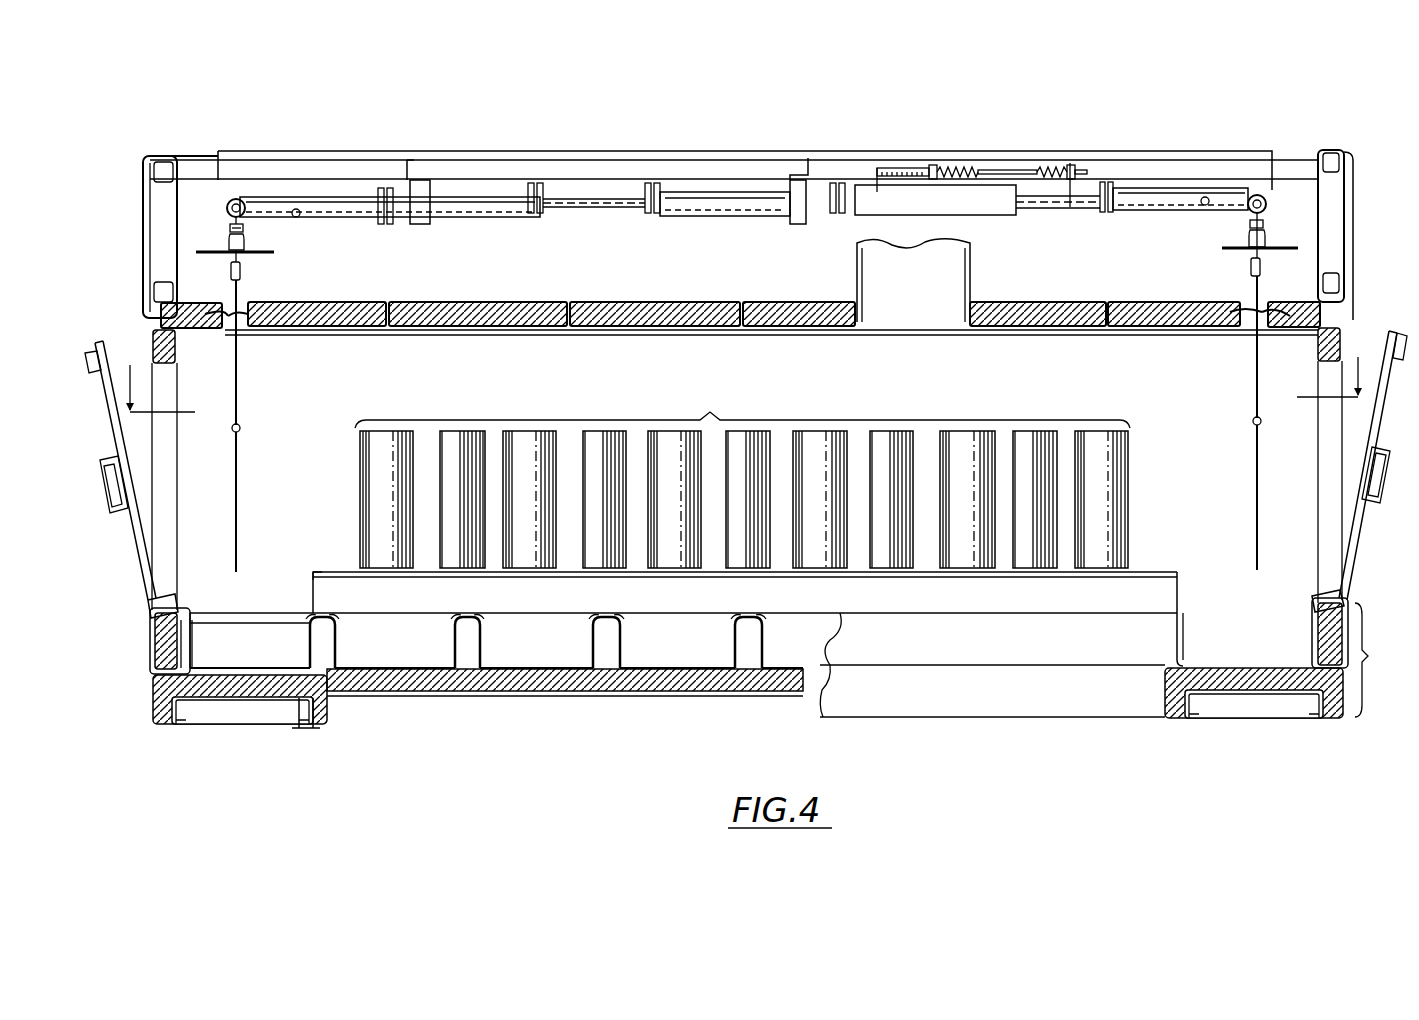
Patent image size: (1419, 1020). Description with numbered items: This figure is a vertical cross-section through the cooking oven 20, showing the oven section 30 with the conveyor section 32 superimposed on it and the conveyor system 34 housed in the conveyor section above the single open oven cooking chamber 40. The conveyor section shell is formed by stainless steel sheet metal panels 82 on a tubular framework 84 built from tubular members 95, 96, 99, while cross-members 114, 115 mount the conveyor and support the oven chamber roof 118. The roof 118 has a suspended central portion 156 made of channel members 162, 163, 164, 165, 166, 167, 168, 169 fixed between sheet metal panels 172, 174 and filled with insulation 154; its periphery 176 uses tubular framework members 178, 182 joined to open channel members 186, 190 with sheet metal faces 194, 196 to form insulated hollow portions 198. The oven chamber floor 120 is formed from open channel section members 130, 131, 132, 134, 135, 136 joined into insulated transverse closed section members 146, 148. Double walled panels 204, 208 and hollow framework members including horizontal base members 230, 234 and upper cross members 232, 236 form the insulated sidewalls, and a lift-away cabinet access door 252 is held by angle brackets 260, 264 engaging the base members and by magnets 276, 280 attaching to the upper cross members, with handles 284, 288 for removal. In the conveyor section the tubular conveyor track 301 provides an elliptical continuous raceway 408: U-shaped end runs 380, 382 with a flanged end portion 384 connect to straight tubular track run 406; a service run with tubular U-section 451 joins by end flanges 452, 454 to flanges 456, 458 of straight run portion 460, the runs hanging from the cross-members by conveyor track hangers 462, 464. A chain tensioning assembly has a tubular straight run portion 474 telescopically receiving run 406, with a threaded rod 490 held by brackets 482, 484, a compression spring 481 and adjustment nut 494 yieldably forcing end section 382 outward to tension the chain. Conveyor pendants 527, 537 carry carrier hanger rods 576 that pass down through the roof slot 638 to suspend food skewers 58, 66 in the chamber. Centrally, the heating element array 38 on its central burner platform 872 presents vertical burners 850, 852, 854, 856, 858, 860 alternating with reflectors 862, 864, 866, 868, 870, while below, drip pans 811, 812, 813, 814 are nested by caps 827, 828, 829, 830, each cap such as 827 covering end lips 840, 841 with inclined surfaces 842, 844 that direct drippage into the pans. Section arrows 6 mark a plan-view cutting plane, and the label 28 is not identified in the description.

The cooking oven 20 is at (140, 100).
The cargo tray assembly 28 is at (857, 272).
The oven section 30 is at (1383, 660).
The conveyor section 32 is at (210, 192).
The conveyor system 34 is at (578, 172).
The heating element array 38 is at (742, 475).
The oven cooking chamber 40 is at (296, 504).
The food skewer 58 is at (1240, 455).
The food skewer 66 is at (245, 462).
The stainless steel sheet metal panels 82 is at (1345, 165).
The tubular framework 84 is at (1310, 160).
The tubular member 95 is at (1330, 290).
The tubular member 96 is at (1318, 152).
The tubular member 99 is at (418, 185).
The cross-member 114 is at (407, 165).
The cross-member 115 is at (815, 178).
The oven chamber roof 118 is at (472, 302).
The oven chamber floor 120 is at (1178, 656).
The open channel section member 130 is at (155, 700).
The open channel section member 131 is at (300, 725).
The open channel section member 132 is at (188, 722).
The open channel section member 134 is at (1345, 712).
The open channel section member 135 is at (1210, 712).
The open channel section member 136 is at (418, 697).
The transverse closed section member 146 is at (200, 700).
The transverse closed section member 148 is at (1275, 700).
The insulation 154 is at (150, 345).
The suspended central portion 156 is at (770, 334).
The channel member 162 is at (335, 303).
The channel member 163 is at (450, 302).
The channel member 164 is at (590, 302).
The channel member 165 is at (740, 302).
The channel member 166 is at (895, 289).
The channel member 167 is at (968, 316).
The channel member 168 is at (1120, 302).
The channel member 169 is at (1150, 333).
The stainless steel sheet metal panel 172 is at (642, 302).
The stainless steel sheet metal panel 174 is at (670, 334).
The roof periphery 176 is at (195, 347).
The tubular framework member 178 is at (150, 300).
The tubular framework member 182 is at (1345, 300).
The open channel member 186 is at (250, 313).
The open channel member 190 is at (1238, 350).
The sheet metal face 194 is at (246, 230).
The sheet metal face 196 is at (178, 345).
The hollow portion 198 is at (180, 300).
The double walled panel 204 is at (172, 530).
The double walled panel 208 is at (1260, 470).
The horizontal base member 230 is at (155, 635).
The upper cross member 232 is at (150, 325).
The horizontal base member 234 is at (1318, 625).
The upper cross member 236 is at (1348, 316).
The cabinet access door 252 is at (1372, 520).
The angle bracket 260 is at (170, 605).
The angle bracket 264 is at (1312, 598).
The magnet 276 is at (88, 372).
The magnet 280 is at (1385, 395).
The handle 284 is at (108, 505).
The handle 288 is at (1372, 487).
The tubular conveyor track 301 is at (288, 192).
The U-shaped end run 380 is at (298, 210).
The U-shaped end run 382 is at (386, 225).
The flanged end portion 384 is at (332, 217).
The straight tubular track run 406 is at (1040, 214).
The elliptical continuous raceway 408 is at (238, 200).
The tubular U-section 451 is at (590, 212).
The end flange 452 is at (545, 190).
The end flange 454 is at (650, 185).
The flange 456 is at (528, 212).
The flange 458 is at (798, 180).
The straight run portion 460 is at (712, 215).
The conveyor track hanger 462 is at (395, 195).
The conveyor track hanger 464 is at (790, 218).
The tubular straight run portion 474 is at (912, 218).
The compression spring 481 is at (1062, 170).
The bracket 482 is at (882, 168).
The bracket 484 is at (1092, 212).
The threaded rod 490 is at (977, 140).
The adjustment nut 494 is at (945, 170).
The conveyor pendant 527 is at (1255, 216).
The conveyor pendant 537 is at (228, 200).
The carrier hanger rod 576 is at (243, 422).
The carrier rod travel path slot 638 is at (252, 330).
The drip pan 811 is at (420, 632).
The drip pan 812 is at (530, 685).
The drip pan 813 is at (650, 634).
The drip pan 814 is at (800, 630).
The cap 827 is at (355, 608).
The cap 828 is at (463, 617).
The cap 829 is at (605, 617).
The cap 830 is at (748, 617).
The end lip 840 is at (306, 640).
The end lip 841 is at (338, 645).
The inclined surface 842 is at (310, 615).
The inclined surface 844 is at (332, 630).
The burner 850 is at (376, 431).
The burner 852 is at (516, 431).
The burner 854 is at (656, 431).
The burner 856 is at (822, 431).
The burner 858 is at (947, 431).
The burner 860 is at (1087, 431).
The reflector 862 is at (450, 431).
The reflector 864 is at (592, 431).
The reflector 866 is at (756, 431).
The reflector 868 is at (882, 431).
The reflector 870 is at (1012, 431).
The central burner platform 872 is at (312, 574).
The section line 6 is at (742, 380).